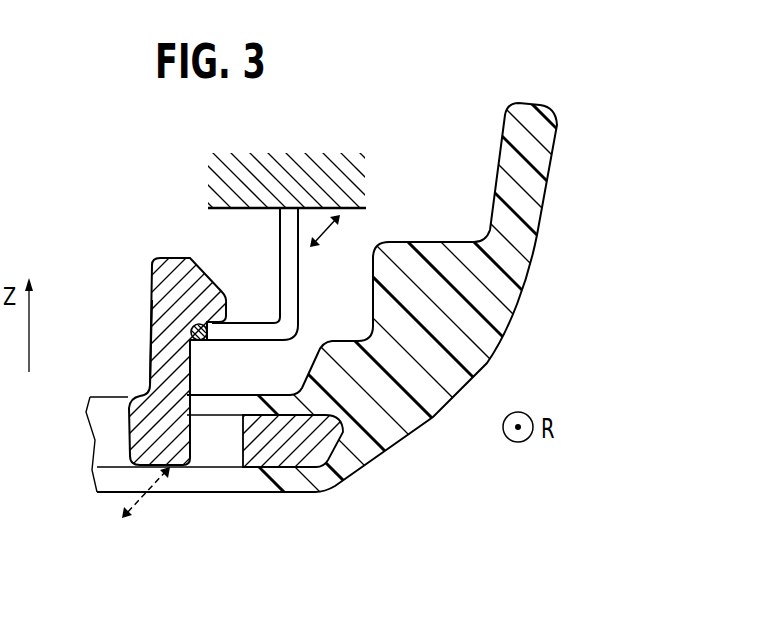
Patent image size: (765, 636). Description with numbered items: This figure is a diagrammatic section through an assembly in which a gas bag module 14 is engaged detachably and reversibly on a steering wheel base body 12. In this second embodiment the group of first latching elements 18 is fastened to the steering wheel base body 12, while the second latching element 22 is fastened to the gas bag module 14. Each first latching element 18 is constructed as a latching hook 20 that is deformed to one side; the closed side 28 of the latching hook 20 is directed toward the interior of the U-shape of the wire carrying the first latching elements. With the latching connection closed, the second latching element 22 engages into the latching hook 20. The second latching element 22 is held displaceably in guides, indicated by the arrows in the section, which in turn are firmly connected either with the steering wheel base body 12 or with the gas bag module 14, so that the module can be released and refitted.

The steering wheel base body 12 is at (380, 426).
The gas bag module 14 is at (297, 180).
The first latching element 18 is at (212, 351).
The latching hook 20 is at (190, 300).
The second latching element 22 is at (213, 318).
The closed side 28 is at (150, 357).